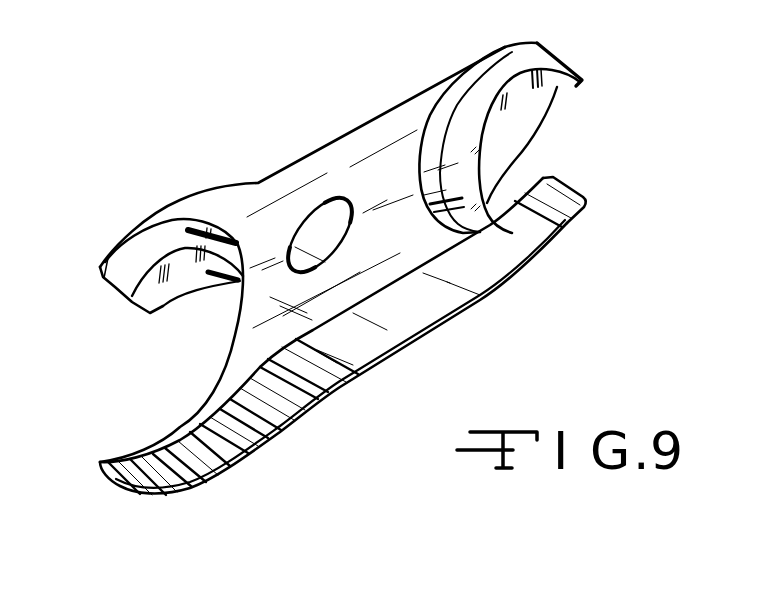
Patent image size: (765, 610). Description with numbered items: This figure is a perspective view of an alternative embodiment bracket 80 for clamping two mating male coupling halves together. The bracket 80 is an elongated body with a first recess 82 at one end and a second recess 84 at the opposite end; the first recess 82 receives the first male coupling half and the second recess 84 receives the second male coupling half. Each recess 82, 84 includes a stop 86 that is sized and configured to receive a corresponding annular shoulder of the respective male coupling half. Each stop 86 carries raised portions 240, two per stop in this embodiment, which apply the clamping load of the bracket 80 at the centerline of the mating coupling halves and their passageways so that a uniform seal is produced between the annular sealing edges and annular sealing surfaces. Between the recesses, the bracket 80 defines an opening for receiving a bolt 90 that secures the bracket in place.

The bracket 80 is at (612, 98).
The first recess 82 is at (487, 90).
The second recess 84 is at (150, 253).
The stop 86 is at (138, 303).
The raised portion 240 is at (177, 262).
The bolt 90 is at (313, 230).